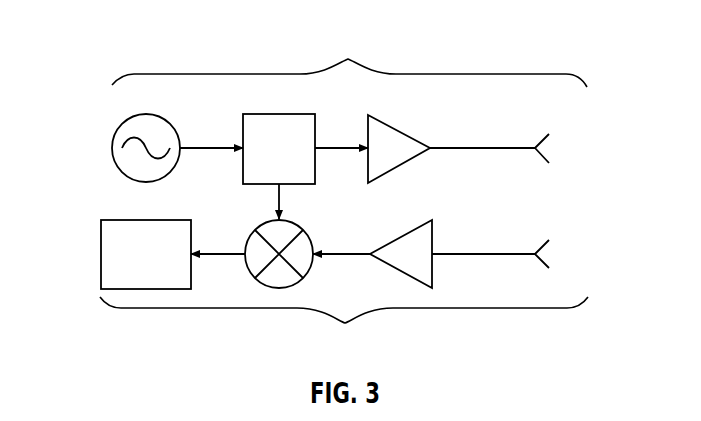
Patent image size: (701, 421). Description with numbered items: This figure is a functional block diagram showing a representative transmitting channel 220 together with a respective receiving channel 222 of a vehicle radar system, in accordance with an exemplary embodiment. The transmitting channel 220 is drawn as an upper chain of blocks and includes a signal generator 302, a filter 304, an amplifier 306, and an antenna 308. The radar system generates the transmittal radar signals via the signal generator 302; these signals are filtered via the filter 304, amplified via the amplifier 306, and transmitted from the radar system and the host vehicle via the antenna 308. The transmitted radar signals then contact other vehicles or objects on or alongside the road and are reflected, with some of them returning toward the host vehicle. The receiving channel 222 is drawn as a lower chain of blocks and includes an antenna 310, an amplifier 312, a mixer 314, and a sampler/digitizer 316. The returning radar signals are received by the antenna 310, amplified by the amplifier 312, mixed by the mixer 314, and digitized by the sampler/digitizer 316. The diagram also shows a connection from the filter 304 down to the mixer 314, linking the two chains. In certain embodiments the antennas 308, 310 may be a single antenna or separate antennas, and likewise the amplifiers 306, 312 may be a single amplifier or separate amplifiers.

The transmitting channel 220 is at (349, 59).
The receiving channel 222 is at (344, 326).
The signal generator 302 is at (112, 148).
The filter 304 is at (278, 114).
The amplifier 306 is at (403, 133).
The antenna 308 is at (540, 157).
The antenna 310 is at (540, 263).
The amplifier 312 is at (432, 238).
The mixer 314 is at (297, 224).
The sampler/digitizer 316 is at (146, 220).